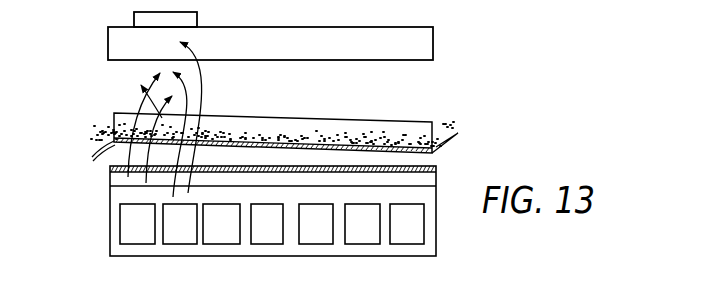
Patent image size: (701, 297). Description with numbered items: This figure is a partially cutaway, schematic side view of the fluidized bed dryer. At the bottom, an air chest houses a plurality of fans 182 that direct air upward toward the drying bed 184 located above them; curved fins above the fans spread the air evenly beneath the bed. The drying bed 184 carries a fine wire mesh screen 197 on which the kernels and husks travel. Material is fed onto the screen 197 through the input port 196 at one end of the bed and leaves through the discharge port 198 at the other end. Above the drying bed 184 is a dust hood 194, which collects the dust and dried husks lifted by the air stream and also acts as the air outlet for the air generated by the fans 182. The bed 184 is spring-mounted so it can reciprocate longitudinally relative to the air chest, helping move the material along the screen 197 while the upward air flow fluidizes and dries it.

The dust hood 194 is at (433, 40).
The drying bed 184 is at (437, 131).
The input port 196 is at (458, 133).
The discharge port 198 is at (88, 150).
The fine wire mesh screen 197 is at (110, 152).
The fans 182 is at (128, 227).